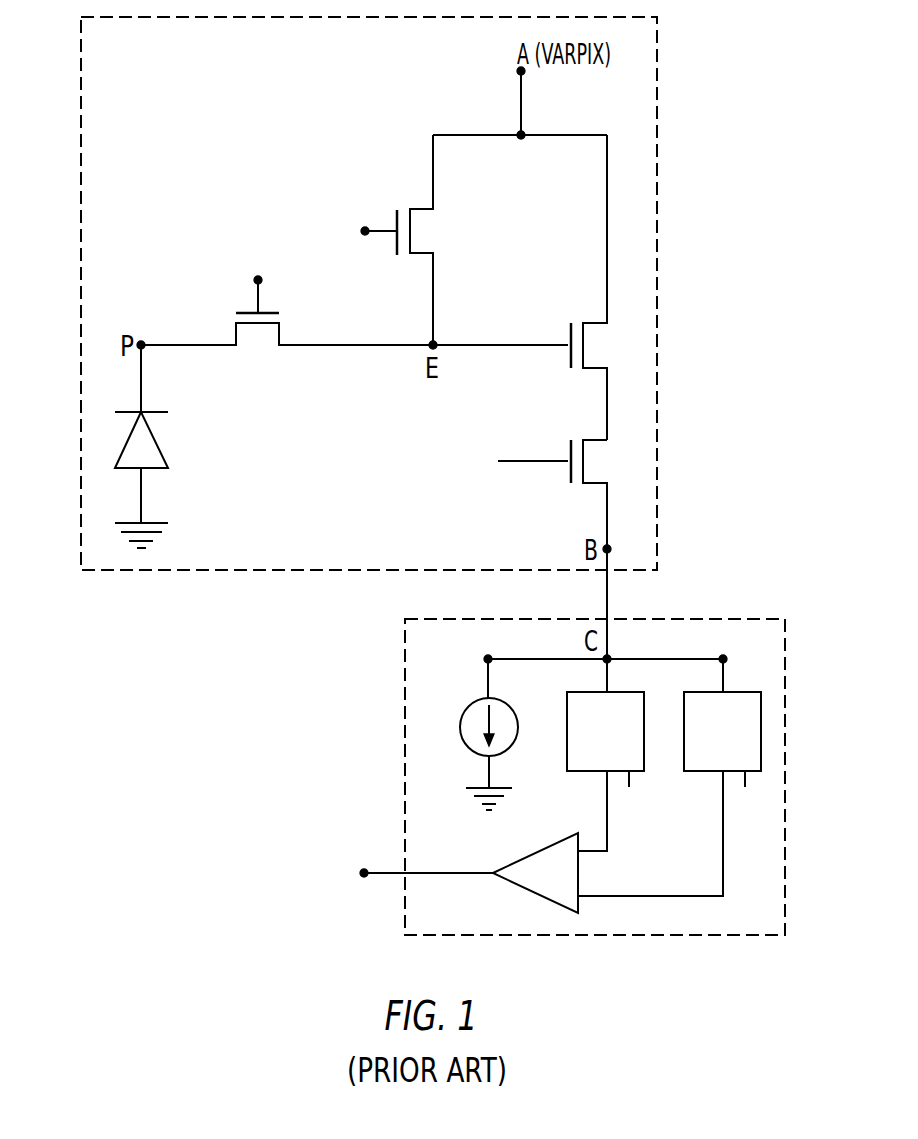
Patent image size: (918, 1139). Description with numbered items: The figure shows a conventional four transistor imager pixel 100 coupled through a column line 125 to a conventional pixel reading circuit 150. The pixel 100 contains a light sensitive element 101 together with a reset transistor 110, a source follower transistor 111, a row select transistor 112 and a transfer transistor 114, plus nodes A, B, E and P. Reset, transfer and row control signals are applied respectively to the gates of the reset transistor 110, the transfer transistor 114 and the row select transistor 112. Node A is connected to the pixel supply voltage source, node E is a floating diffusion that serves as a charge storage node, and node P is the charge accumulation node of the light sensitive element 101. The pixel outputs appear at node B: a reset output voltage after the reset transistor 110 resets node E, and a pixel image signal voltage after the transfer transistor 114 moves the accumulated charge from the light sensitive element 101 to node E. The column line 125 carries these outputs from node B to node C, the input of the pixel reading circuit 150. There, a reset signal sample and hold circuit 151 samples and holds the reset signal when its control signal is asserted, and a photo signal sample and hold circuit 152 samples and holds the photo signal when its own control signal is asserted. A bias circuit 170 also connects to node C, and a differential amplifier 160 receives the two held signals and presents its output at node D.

The four transistor imager pixel 100 is at (657, 68).
The light sensitive element 101 is at (141, 448).
The reset transistor 110 is at (422, 209).
The source follower transistor 111 is at (594, 322).
The row select transistor 112 is at (594, 440).
The transfer transistor 114 is at (236, 336).
The column line 125 is at (609, 591).
The pixel reading circuit 150 is at (735, 619).
The reset signal sample and hold circuit 151 is at (610, 755).
The photo signal sample and hold circuit 152 is at (674, 777).
The differential amplifier 160 is at (440, 878).
The bias circuit 170 is at (470, 705).